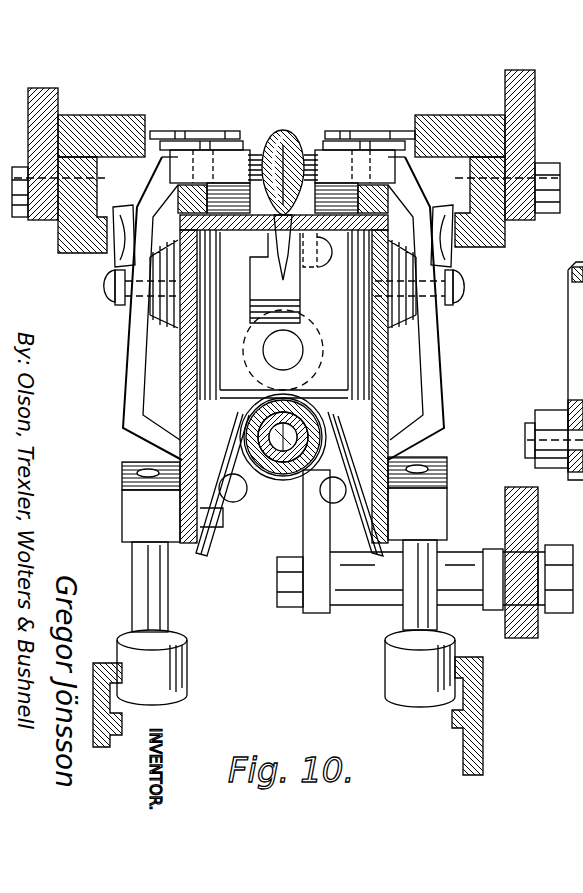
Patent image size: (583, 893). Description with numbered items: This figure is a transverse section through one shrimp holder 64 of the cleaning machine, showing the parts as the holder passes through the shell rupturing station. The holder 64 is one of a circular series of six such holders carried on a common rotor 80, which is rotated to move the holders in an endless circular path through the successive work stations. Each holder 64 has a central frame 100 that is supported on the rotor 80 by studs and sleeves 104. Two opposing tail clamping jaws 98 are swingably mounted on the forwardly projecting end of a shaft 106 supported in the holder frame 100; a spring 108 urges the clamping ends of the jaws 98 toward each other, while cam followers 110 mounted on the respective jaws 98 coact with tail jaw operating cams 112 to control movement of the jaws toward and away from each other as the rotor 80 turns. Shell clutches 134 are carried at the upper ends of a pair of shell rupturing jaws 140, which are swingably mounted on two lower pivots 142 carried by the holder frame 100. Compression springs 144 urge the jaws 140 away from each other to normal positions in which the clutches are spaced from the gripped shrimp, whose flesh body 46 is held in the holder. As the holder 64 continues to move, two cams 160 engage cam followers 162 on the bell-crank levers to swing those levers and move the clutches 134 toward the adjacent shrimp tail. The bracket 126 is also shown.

The flesh body 46 is at (268, 133).
The shrimp holder 64 is at (329, 116).
The rotor 80 is at (523, 640).
The tail clamping jaws 98 is at (182, 370).
The central frame 100 is at (313, 531).
The sleeves 104 is at (373, 597).
The shaft 106 is at (326, 419).
The spring 108 is at (182, 434).
The cam followers 110 is at (173, 666).
The tail jaw operating cams 112 is at (120, 672).
The mounting bracket 126 is at (122, 720).
The shell clutches 134 is at (288, 125).
The shell rupturing jaws 140 is at (133, 396).
The lower pivots 142 is at (328, 491).
The compression springs 144 is at (147, 348).
The cams 160 is at (150, 118).
The cam followers 162 is at (281, 205).